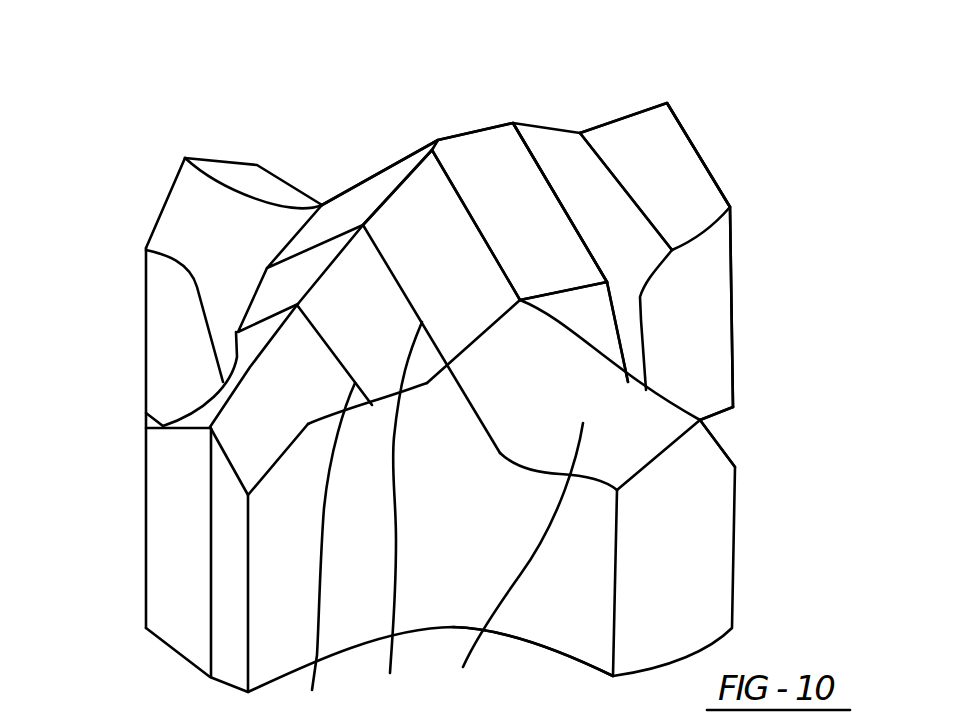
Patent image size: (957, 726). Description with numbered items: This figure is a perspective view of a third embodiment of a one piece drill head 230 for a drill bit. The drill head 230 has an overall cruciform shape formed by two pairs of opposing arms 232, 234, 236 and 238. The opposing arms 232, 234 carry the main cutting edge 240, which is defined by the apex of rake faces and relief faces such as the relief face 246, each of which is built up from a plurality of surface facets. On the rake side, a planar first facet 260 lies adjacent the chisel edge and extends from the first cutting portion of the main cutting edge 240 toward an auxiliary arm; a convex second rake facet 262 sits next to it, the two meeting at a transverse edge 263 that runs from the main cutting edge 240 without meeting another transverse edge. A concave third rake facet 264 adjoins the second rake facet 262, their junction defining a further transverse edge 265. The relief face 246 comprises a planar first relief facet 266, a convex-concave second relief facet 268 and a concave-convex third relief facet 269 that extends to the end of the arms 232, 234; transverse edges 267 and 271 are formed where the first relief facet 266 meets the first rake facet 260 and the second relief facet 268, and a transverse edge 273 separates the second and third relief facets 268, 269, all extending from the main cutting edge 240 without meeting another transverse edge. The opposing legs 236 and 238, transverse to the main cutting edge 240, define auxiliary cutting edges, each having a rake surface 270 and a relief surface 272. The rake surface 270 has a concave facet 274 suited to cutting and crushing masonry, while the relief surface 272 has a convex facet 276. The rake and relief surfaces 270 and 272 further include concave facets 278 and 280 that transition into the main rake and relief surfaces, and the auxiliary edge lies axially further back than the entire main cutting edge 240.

The drill head 230 is at (127, 146).
The arm 232 is at (724, 196).
The arm 234 is at (147, 530).
The arm 236 is at (583, 608).
The arm 238 is at (220, 160).
The main cutting edge 240 is at (436, 128).
The relief face 246 is at (224, 355).
The first facet 260 is at (458, 286).
The second rake facet 262 is at (383, 337).
The transverse edge 263 is at (399, 515).
The third rake facet 264 is at (288, 416).
The transverse edge 265 is at (321, 554).
The first relief facet 266 is at (533, 234).
The transverse edge 267 is at (449, 181).
The second relief facet 268 is at (611, 214).
The third relief facet 269 is at (686, 186).
The rake surface 270 is at (660, 389).
The transverse edge 271 is at (527, 142).
The relief surface 272 is at (158, 200).
The transverse edge 273 is at (598, 141).
The concave facet 274 is at (718, 440).
The convex facet 276 is at (511, 563).
The concave facet 278 is at (460, 403).
The concave facet 280 is at (618, 327).